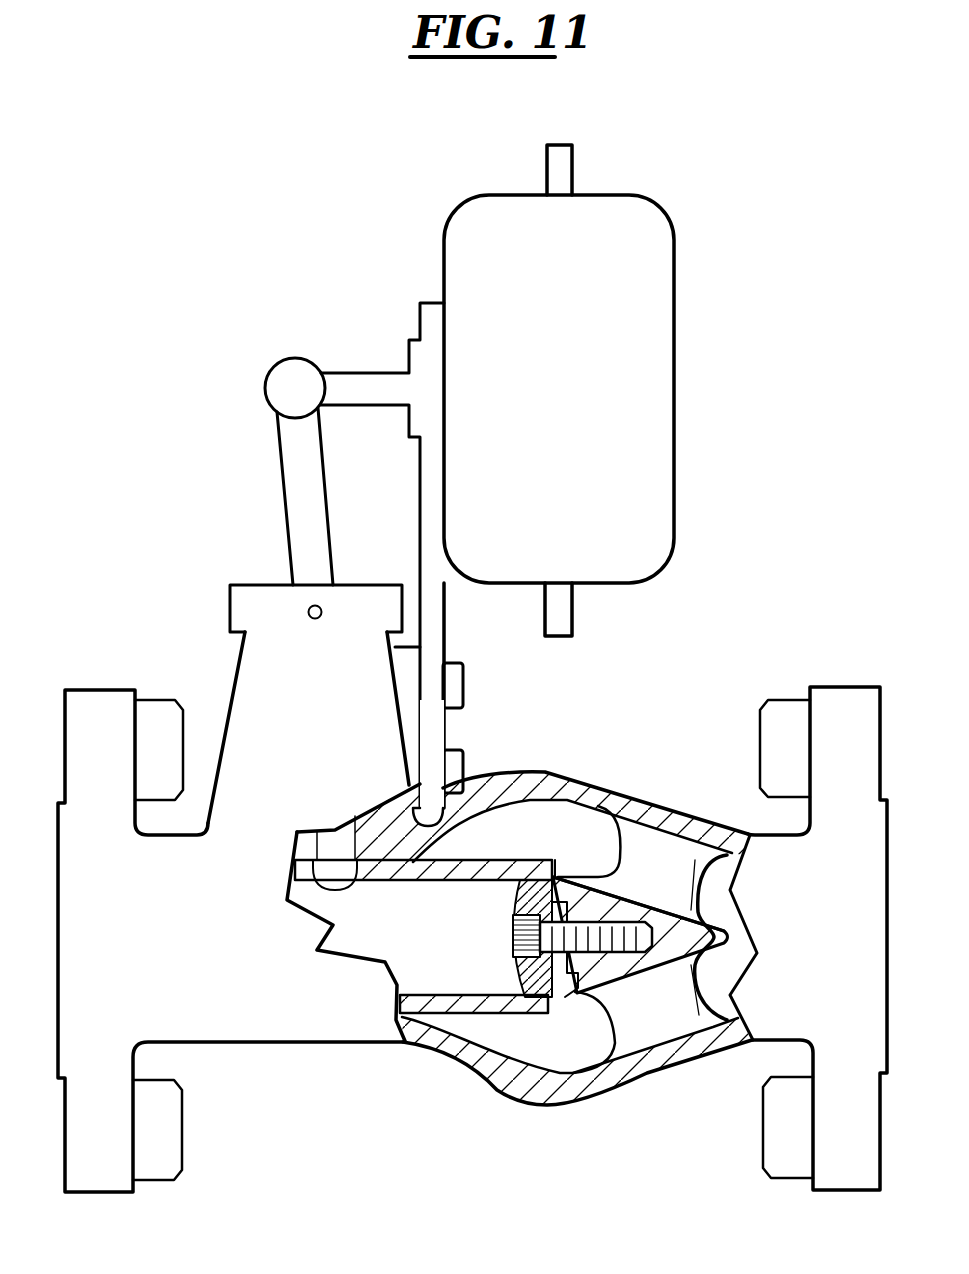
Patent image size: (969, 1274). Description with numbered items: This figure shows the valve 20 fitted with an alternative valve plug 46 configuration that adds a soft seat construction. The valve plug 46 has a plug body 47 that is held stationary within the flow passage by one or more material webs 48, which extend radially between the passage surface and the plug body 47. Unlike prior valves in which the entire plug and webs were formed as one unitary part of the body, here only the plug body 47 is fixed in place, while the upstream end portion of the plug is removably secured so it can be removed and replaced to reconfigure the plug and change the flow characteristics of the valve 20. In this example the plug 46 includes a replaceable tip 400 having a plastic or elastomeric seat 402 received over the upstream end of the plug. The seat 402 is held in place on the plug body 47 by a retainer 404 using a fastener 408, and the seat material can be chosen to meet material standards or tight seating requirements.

The valve 20 is at (766, 376).
The valve plug 46 is at (617, 887).
The plug body 47 is at (608, 905).
The material webs 48 is at (682, 884).
The replaceable tip 400 is at (560, 860).
The seat 402 is at (513, 897).
The retainer 404 is at (585, 1012).
The fastener 408 is at (510, 942).